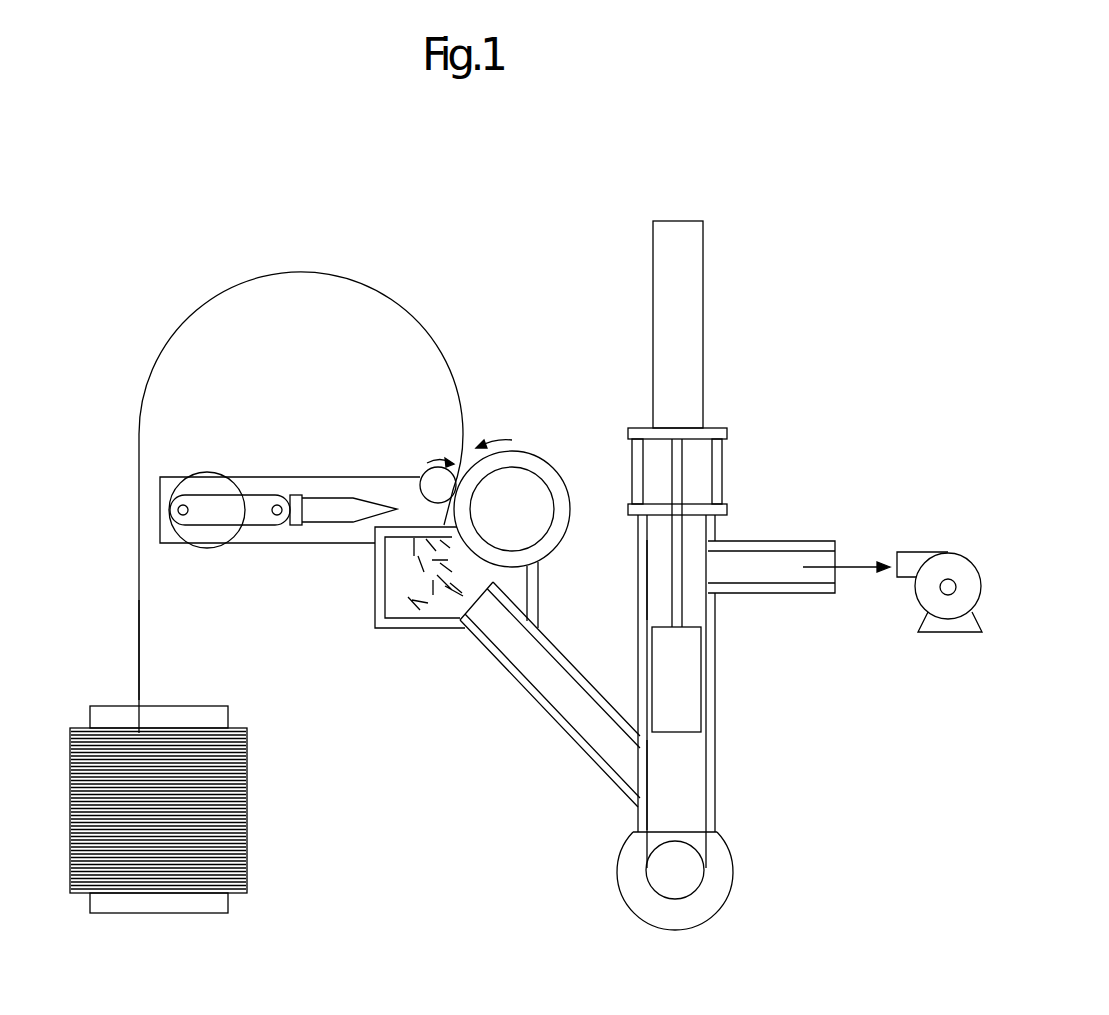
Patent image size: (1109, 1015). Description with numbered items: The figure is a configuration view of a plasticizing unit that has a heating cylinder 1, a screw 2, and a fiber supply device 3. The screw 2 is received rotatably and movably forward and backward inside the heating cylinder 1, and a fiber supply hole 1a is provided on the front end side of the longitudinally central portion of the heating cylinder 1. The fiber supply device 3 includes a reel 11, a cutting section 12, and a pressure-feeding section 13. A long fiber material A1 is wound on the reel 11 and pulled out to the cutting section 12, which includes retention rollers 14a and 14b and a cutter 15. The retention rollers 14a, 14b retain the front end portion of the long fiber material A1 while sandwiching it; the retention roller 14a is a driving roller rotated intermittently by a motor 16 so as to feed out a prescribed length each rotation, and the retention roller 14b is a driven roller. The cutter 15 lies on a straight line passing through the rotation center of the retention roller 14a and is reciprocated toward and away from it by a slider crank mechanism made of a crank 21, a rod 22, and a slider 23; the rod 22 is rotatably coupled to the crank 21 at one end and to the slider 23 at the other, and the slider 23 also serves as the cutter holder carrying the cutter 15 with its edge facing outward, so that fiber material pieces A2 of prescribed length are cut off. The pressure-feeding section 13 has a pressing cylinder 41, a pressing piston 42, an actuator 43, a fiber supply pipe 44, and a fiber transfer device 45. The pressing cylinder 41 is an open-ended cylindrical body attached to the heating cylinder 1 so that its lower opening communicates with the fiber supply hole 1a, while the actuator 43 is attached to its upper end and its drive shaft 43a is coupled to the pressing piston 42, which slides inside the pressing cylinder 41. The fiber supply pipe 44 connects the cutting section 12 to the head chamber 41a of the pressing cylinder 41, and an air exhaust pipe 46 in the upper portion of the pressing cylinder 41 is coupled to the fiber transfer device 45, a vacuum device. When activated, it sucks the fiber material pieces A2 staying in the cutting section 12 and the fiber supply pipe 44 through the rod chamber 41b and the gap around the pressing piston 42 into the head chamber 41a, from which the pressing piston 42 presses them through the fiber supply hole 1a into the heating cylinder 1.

The heating cylinder 1 is at (670, 927).
The fiber supply hole 1a is at (708, 843).
The screw 2 is at (688, 885).
The fiber supply device 3 is at (552, 285).
The reel 11 is at (228, 900).
The cutting section 12 is at (330, 477).
The pressure-feeding section 13 is at (722, 458).
The retention roller 14a is at (528, 452).
The retention roller 14b is at (423, 490).
The cutter 15 is at (330, 510).
The motor 16 is at (540, 520).
The crank 21 is at (208, 478).
The rod 22 is at (215, 517).
The slider 23 is at (293, 520).
The pressing cylinder 41 is at (715, 643).
The head chamber 41a is at (692, 753).
The rod chamber 41b is at (698, 602).
The pressing piston 42 is at (688, 683).
The actuator 43 is at (690, 268).
The drive shaft 43a is at (677, 587).
The fiber supply pipe 44 is at (558, 727).
The fiber transfer device 45 is at (948, 558).
The air exhaust pipe 46 is at (812, 540).
The long fiber material A1 is at (138, 610).
The fiber material pieces A2 is at (413, 607).